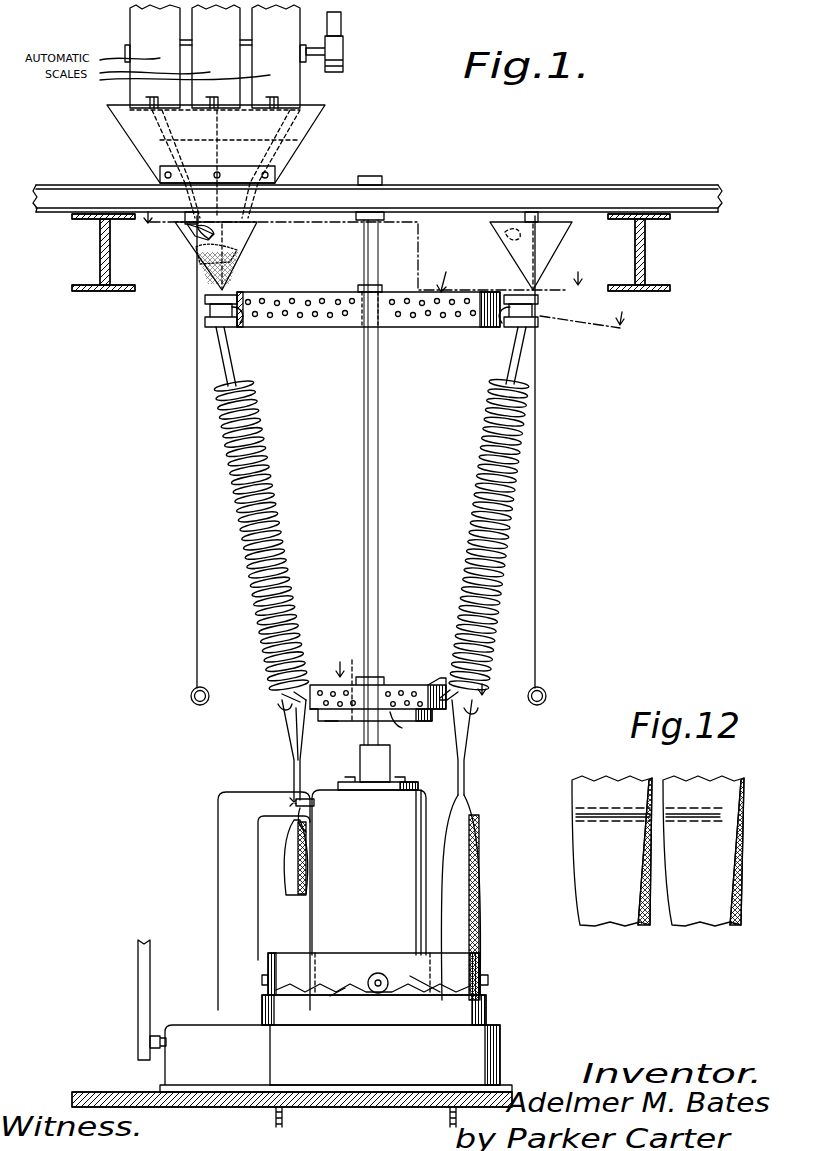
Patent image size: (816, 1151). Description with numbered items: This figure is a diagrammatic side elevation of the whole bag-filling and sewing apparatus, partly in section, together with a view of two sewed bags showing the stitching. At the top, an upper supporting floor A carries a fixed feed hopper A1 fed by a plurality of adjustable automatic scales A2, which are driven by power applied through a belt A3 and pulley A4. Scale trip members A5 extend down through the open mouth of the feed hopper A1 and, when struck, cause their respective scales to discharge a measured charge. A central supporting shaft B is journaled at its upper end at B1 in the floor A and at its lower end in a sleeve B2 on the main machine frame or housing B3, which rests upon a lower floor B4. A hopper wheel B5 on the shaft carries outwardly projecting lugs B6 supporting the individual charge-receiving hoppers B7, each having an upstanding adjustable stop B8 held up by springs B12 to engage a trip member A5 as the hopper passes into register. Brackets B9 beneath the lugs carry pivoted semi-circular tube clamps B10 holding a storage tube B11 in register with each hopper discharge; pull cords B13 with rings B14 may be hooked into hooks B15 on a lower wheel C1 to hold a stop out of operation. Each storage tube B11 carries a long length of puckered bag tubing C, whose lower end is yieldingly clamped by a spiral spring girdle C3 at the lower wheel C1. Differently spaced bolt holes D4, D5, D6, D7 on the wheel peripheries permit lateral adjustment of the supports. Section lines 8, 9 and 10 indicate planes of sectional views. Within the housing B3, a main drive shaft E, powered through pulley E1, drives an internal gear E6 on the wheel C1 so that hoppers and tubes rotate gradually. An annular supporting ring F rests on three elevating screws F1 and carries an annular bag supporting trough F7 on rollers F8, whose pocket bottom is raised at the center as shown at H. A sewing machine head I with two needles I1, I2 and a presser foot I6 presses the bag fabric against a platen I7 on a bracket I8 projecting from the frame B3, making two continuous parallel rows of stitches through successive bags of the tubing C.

In FIG. 1, the upper supporting floor A is at (452, 190).
In FIG. 1, the feed hopper A1 is at (130, 140).
In FIG. 1, the automatic scales A2 is at (215, 56).
In FIG. 1, the belt A3 is at (343, 30).
In FIG. 1, the pulley A4 is at (345, 46).
In FIG. 1, the scale trip members A5 is at (165, 126).
In FIG. 1, the central supporting shaft B is at (364, 462).
In FIG. 1, the upper journal B1 is at (382, 180).
In FIG. 1, the sleeve B2 is at (392, 760).
In FIG. 1, the main machine frame or housing B3 is at (520, 1040).
In FIG. 1, the lower floor B4 is at (92, 1092).
In FIG. 1, the hopper wheel B5 is at (398, 290).
In FIG. 1, the lugs B6 is at (205, 299).
In FIG. 1, the charge-receiving hoppers B7 is at (242, 236).
In FIG. 1, the adjustable stop B8 is at (185, 230).
In FIG. 1, the brackets B9 is at (240, 322).
In FIG. 1, the tube clamps B10 is at (207, 321).
In FIG. 1, the storage tube B11 is at (232, 358).
In FIG. 1, the springs B12 is at (210, 240).
In FIG. 1, the pull cords B13 is at (197, 577).
In FIG. 1, the rings B14 is at (190, 698).
In FIG. 1, the hooks B15 is at (278, 712).
In FIG. 1, the bag tubing C is at (278, 490).
In FIG. 12, the bag tubing C is at (690, 780).
In FIG. 1, the lower wheel C1 is at (352, 660).
In FIG. 1, the spiral spring girdle C3 is at (284, 698).
In FIG. 1, the bolt holes D4 is at (338, 302).
In FIG. 1, the bolt holes D5 is at (318, 317).
In FIG. 1, the bolt holes D6 is at (398, 694).
In FIG. 1, the bolt holes D7 is at (330, 708).
In FIG. 1, the main drive shaft E is at (138, 1044).
In FIG. 1, the pulley E1 is at (138, 1006).
In FIG. 1, the internal gear E6 is at (396, 722).
In FIG. 1, the annular supporting ring F is at (488, 1004).
In FIG. 1, the elevating screws F1 is at (400, 1118).
In FIG. 1, the annular bag supporting trough F7 is at (482, 966).
In FIG. 1, the rollers F8 is at (377, 972).
In FIG. 1, the raised bottom wall H is at (385, 977).
In FIG. 1, the sewing machine head I is at (318, 806).
In FIG. 1, the needle I1 is at (302, 799).
In FIG. 1, the needle I2 is at (308, 814).
In FIG. 1, the presser foot I6 is at (300, 838).
In FIG. 1, the platen I7 is at (292, 800).
In FIG. 1, the bracket I8 is at (218, 862).
In FIG. 1, the section line 8- 8 is at (362, 256).
In FIG. 1, the section line 9- 9 is at (537, 287).
In FIG. 1, the section line 10- 10 is at (416, 684).